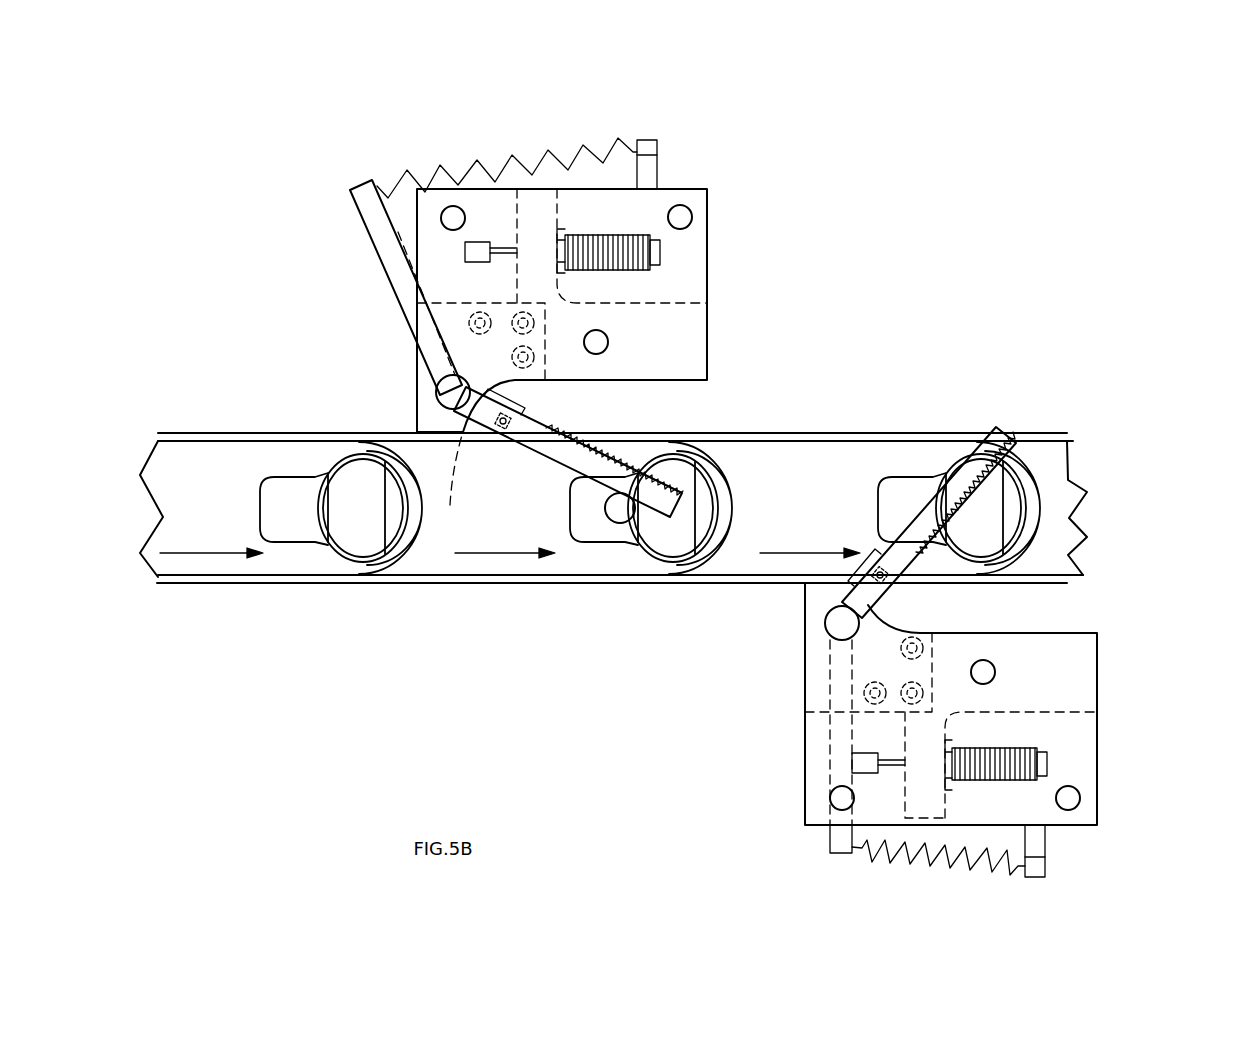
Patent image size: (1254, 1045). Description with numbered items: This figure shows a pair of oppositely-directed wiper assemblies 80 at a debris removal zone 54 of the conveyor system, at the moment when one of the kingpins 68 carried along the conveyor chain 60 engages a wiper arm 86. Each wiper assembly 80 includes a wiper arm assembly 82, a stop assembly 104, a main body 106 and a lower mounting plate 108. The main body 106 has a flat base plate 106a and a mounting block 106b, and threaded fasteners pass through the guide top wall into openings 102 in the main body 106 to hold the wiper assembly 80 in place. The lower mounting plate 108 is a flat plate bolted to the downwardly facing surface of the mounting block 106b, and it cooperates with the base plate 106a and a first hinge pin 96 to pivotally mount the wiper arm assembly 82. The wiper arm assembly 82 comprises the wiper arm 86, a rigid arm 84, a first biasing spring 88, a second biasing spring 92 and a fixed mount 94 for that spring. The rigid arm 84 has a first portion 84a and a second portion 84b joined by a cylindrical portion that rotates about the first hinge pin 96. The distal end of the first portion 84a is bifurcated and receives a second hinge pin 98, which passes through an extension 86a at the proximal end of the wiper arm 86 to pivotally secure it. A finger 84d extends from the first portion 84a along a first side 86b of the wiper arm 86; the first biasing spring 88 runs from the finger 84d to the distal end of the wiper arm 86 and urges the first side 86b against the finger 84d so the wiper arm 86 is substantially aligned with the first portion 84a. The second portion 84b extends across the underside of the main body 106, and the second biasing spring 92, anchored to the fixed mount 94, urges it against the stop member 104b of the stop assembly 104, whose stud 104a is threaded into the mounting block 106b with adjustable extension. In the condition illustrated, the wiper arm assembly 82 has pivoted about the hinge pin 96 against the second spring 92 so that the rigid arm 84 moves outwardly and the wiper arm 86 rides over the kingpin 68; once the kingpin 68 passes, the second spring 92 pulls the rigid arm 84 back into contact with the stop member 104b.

The debris removal zone 54 is at (878, 297).
The conveyor chain 60 is at (293, 562).
The kingpin 68 is at (620, 537).
The wiper assembly 80 is at (375, 128).
The wiper arm assembly 82 is at (645, 423).
The rigid arm 84 is at (378, 261).
The first portion of the rigid arm 84a is at (518, 381).
The second portion of the rigid arm 84b is at (412, 355).
The finger 84d is at (533, 422).
The wiper arm 86 is at (620, 522).
The extension 86a is at (450, 480).
The first side of the wiper arm 86b is at (667, 482).
The first biasing spring 88 is at (633, 413).
The second biasing spring 92 is at (548, 150).
The fixed mount 94 is at (655, 150).
The first hinge pin 96 is at (437, 389).
The second hinge pin 98 is at (503, 424).
The openings 102 is at (692, 213).
The stop assembly 104 is at (593, 215).
The stud 104a is at (630, 237).
The stop member 104b is at (482, 240).
The main body 106 is at (712, 225).
The flat base plate 106a is at (710, 285).
The mounting block 106b is at (697, 366).
The lower mounting plate 108 is at (414, 350).